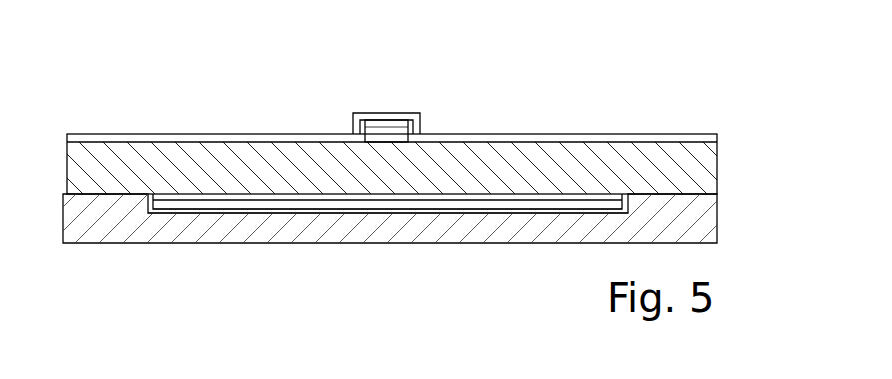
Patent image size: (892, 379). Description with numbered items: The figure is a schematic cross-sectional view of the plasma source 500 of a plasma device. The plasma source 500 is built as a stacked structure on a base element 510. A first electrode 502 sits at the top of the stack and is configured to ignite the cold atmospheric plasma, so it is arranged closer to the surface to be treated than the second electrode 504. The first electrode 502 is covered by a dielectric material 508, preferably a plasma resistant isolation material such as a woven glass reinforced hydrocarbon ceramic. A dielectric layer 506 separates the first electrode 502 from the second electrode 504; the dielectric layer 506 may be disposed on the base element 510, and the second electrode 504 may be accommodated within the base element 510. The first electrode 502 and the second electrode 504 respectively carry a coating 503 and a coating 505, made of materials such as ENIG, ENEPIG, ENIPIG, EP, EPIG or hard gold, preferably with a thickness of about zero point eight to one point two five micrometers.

The plasma source 500 is at (184, 89).
The first electrode 502 is at (405, 112).
The coating 503 is at (379, 112).
The second electrode 504 is at (631, 204).
The coating 505 is at (535, 216).
The dielectric layer 506 is at (720, 172).
The dielectric material 508 is at (557, 132).
The base element 510 is at (720, 236).